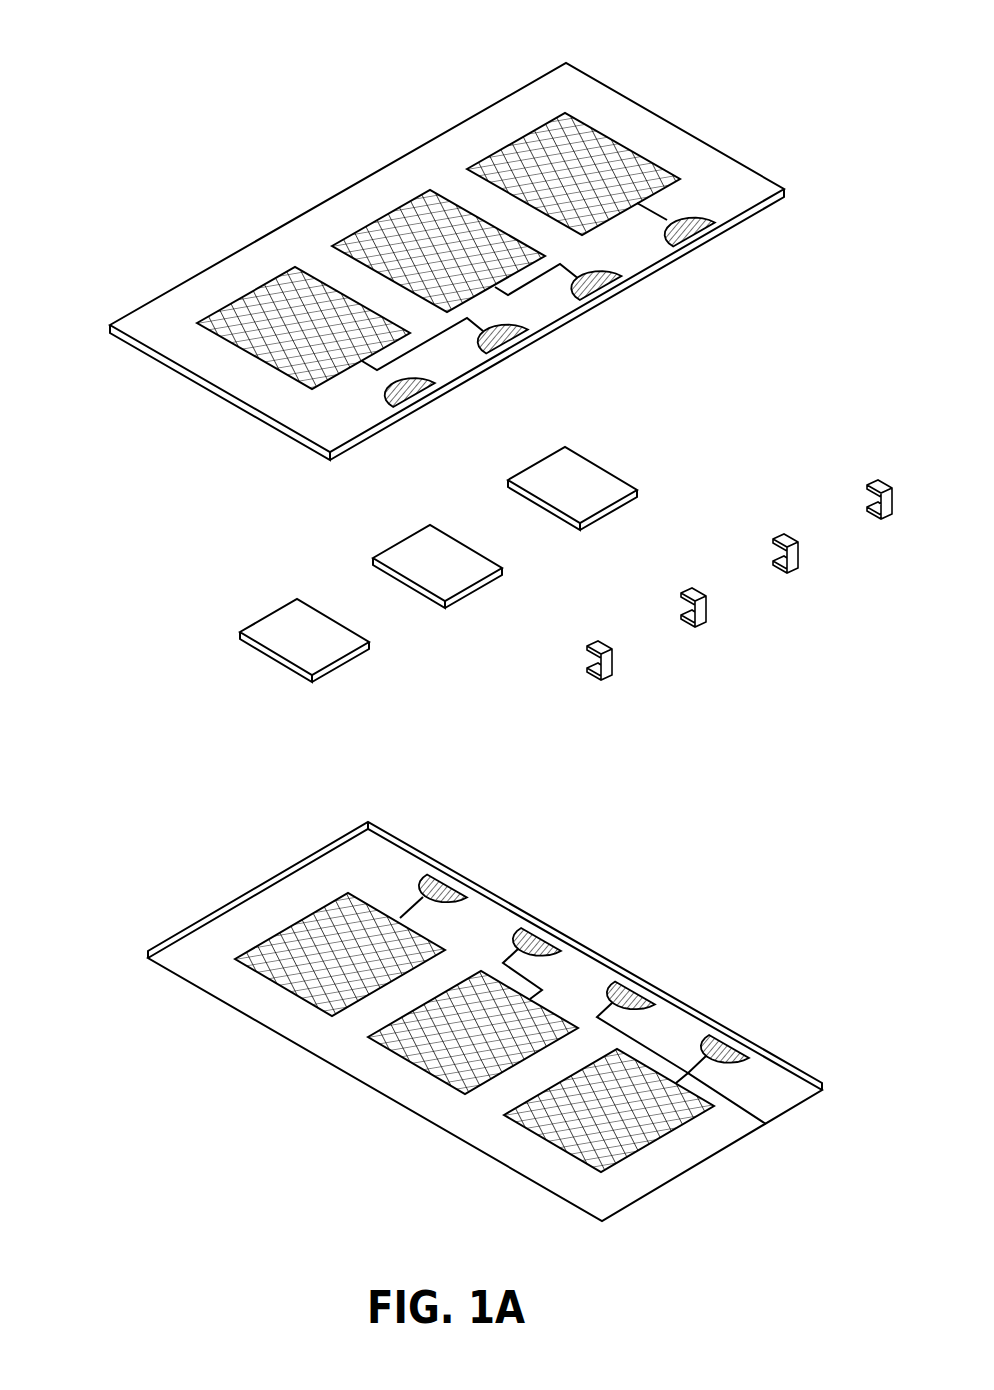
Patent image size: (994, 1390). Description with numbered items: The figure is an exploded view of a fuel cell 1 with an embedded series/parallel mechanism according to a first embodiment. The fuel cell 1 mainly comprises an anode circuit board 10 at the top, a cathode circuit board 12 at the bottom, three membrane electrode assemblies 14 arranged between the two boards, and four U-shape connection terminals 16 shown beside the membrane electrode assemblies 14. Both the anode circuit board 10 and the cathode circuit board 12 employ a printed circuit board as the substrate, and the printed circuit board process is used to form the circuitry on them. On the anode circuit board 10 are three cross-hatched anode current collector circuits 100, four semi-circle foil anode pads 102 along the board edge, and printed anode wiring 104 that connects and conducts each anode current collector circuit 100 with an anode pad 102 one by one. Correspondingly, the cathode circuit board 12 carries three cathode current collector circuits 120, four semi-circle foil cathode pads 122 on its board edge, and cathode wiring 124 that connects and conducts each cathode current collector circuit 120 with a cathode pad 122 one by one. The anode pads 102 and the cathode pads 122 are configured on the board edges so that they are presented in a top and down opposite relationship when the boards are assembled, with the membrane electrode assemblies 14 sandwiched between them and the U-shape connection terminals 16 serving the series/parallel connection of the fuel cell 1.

The fuel cell with embedded series/parallel mechanism 1 is at (198, 107).
The anode circuit board 10 is at (187, 387).
The anode current collector circuit 100 is at (538, 160).
The anode pad 102 is at (690, 238).
The anode wiring 104 is at (663, 215).
The cathode circuit board 12 is at (245, 866).
The cathode current collector circuit 120 is at (323, 975).
The cathode pad 122 is at (452, 887).
The cathode wiring 124 is at (407, 910).
The membrane electrode assembly 14 is at (297, 652).
The U-shape connection terminal 16 is at (607, 664).